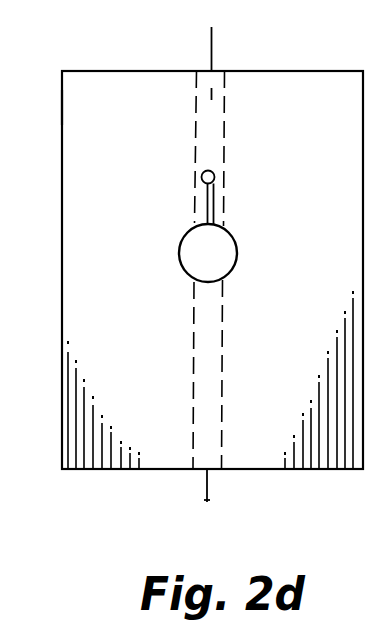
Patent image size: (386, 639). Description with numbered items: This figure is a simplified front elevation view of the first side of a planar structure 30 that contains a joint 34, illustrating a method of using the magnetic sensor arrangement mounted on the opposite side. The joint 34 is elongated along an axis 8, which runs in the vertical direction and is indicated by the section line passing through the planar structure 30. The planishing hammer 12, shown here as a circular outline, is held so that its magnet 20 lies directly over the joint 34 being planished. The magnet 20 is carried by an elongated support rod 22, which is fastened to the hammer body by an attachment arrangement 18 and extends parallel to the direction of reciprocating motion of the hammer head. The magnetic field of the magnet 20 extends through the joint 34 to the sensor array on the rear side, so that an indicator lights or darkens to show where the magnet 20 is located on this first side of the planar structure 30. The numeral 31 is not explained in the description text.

The axis of elongation 8 is at (212, 47).
The planishing hammer 12 is at (237, 261).
The attachment arrangement 18 is at (214, 219).
The magnet 20 is at (258, 181).
The support rod 22 is at (215, 177).
The planar structure 30 is at (130, 72).
The housing wall 31 is at (88, 99).
The joint 34 is at (225, 112).